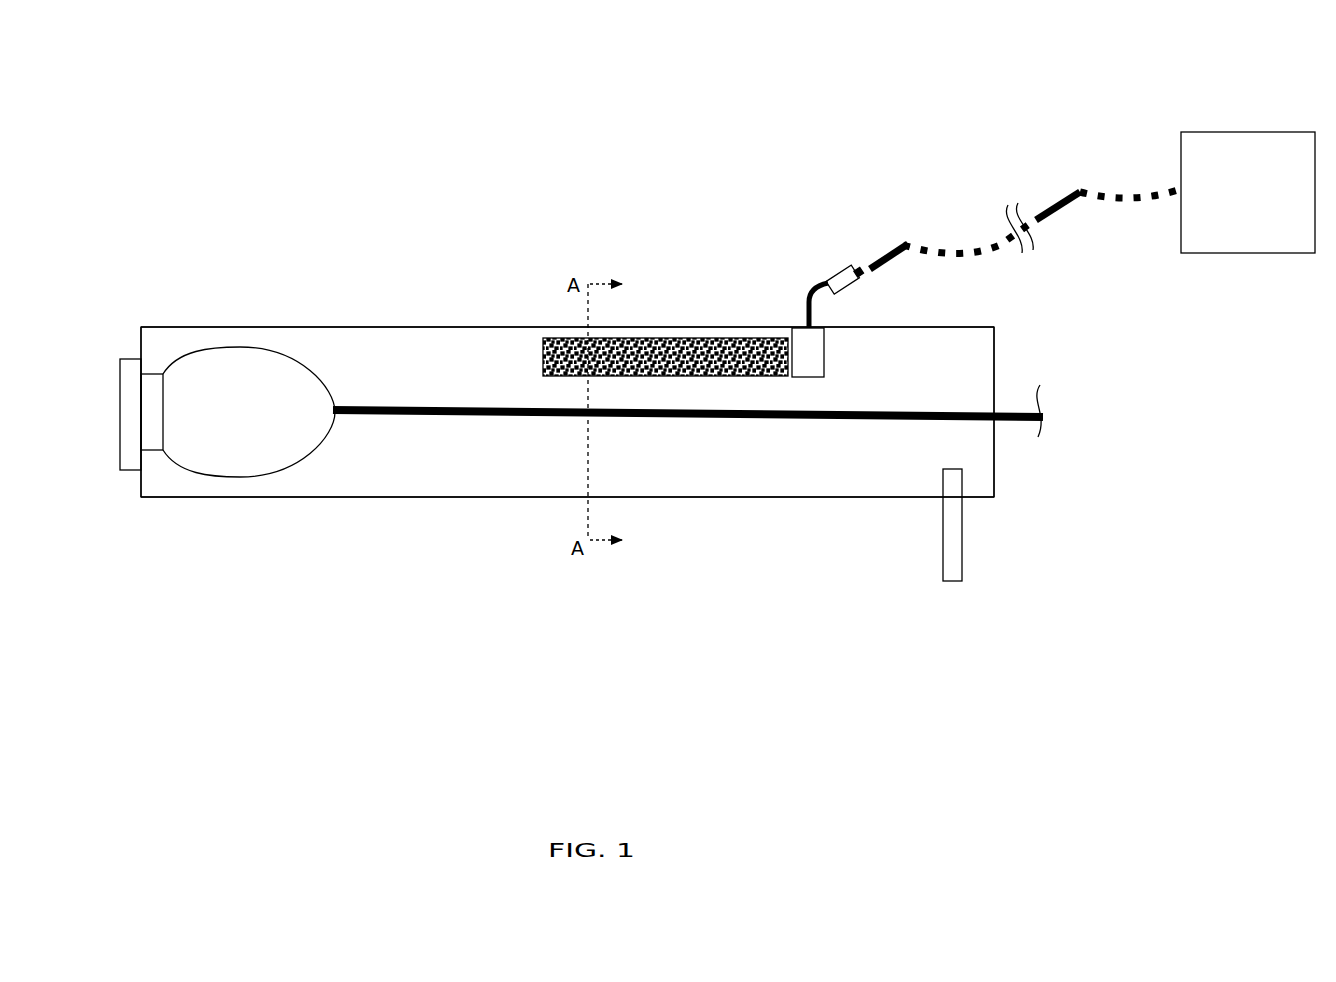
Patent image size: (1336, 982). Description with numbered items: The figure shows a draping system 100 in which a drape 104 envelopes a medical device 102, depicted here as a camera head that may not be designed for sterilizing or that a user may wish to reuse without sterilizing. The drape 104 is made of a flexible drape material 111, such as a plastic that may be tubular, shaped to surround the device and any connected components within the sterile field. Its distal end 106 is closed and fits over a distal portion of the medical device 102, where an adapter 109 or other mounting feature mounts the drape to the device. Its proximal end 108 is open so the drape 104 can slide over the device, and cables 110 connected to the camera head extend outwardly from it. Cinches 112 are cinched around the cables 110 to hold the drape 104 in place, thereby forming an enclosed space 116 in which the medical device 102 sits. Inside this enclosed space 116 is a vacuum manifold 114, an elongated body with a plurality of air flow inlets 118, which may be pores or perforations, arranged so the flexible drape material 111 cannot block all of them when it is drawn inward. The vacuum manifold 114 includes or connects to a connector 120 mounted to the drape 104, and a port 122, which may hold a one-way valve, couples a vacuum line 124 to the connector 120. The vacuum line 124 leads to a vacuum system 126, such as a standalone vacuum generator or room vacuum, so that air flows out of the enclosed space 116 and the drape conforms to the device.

The draping system 100 is at (287, 180).
The medical device 102 is at (230, 348).
The drape 104 is at (333, 312).
The distal end 106 is at (132, 493).
The proximal end 108 is at (1000, 508).
The adapter 109 is at (132, 358).
The cables 110 is at (468, 408).
The flexible drape material 111 is at (455, 328).
The cinches 112 is at (943, 565).
The vacuum manifold 114 is at (744, 337).
The enclosed space 116 is at (449, 477).
The air flow inlets 118 is at (707, 350).
The connector 120 is at (824, 355).
The port 122 is at (837, 272).
The vacuum line 124 is at (905, 243).
The vacuum system 126 is at (1218, 132).